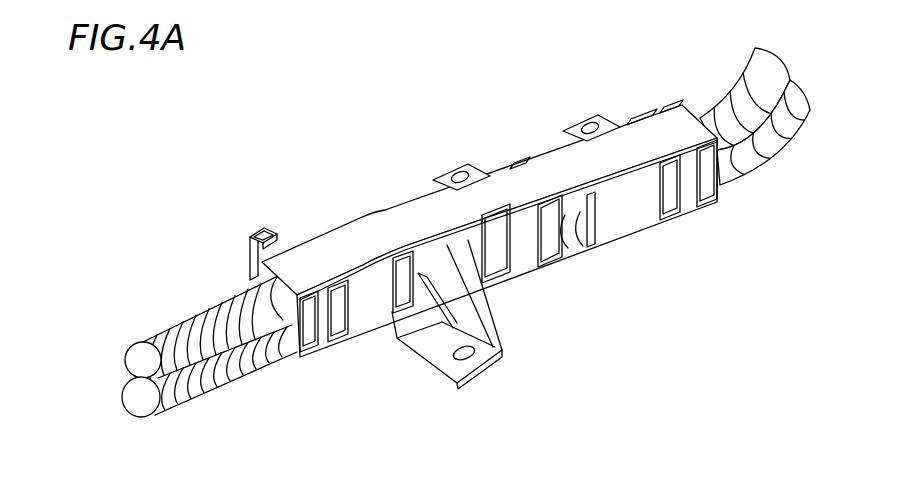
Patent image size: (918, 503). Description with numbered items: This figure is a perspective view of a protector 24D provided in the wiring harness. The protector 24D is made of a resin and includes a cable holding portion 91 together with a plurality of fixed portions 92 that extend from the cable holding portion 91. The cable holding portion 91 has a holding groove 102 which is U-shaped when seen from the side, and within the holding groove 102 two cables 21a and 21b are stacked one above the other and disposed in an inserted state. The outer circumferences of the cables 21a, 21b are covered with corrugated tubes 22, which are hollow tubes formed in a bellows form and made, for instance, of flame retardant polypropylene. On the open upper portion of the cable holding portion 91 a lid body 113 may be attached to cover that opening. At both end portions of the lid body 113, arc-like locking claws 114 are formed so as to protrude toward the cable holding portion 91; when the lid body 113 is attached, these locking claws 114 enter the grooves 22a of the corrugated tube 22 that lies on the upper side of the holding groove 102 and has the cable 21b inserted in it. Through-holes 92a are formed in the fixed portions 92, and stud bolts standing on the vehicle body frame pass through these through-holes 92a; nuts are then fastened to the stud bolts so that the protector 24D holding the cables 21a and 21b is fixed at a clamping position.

The protector 24D is at (371, 197).
The fixed portions 92 is at (506, 246).
The through-holes 92a is at (465, 360).
The lid body 113 is at (518, 178).
The locking claws 114 is at (238, 250).
The corrugated tubes 22 is at (461, 263).
The grooves 22a is at (233, 312).
The cable 21a is at (210, 388).
The cable 21b is at (210, 344).
The holding groove 102 is at (280, 350).
The cable holding portion 91 is at (530, 275).